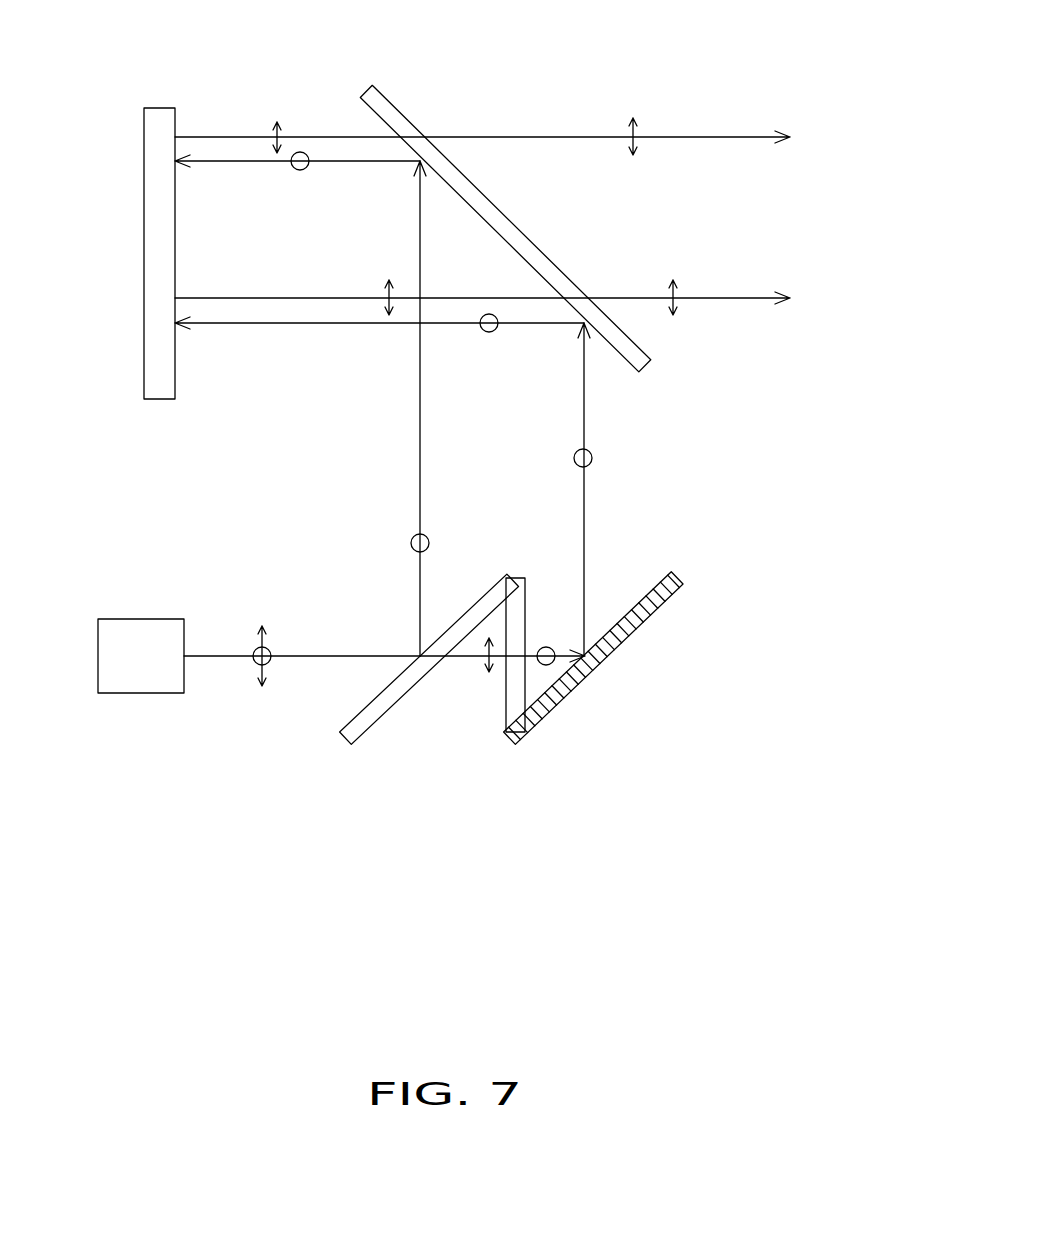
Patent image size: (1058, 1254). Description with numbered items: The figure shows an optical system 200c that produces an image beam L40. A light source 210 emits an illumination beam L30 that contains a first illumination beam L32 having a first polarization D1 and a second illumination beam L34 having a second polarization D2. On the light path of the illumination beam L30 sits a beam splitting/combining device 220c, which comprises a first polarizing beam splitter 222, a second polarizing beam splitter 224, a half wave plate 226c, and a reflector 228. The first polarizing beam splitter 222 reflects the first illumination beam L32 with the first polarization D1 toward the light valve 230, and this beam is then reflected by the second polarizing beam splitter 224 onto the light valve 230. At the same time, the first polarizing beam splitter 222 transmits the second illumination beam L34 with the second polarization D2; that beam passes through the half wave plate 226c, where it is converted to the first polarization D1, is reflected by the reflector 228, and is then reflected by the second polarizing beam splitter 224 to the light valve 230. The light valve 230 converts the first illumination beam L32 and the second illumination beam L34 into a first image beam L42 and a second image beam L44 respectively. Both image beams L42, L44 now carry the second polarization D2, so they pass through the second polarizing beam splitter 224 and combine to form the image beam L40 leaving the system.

The optical system 200c is at (849, 913).
The light source 210 is at (143, 617).
The beam splitting/combining device 220c is at (799, 495).
The first polarizing beam splitter 222 is at (365, 718).
The second polarizing beam splitter 224 is at (408, 127).
The half wave plate 226c is at (512, 682).
The reflector 228 is at (604, 646).
The light valve 230 is at (160, 107).
The illumination beam L30 is at (218, 658).
The first illumination beam L32 is at (420, 432).
The second illumination beam L34 is at (584, 560).
The image beam L40 is at (735, 320).
The first image beam L42 is at (330, 136).
The second image beam L44 is at (263, 298).
The first polarization D1 is at (594, 458).
The second polarization D2 is at (673, 292).